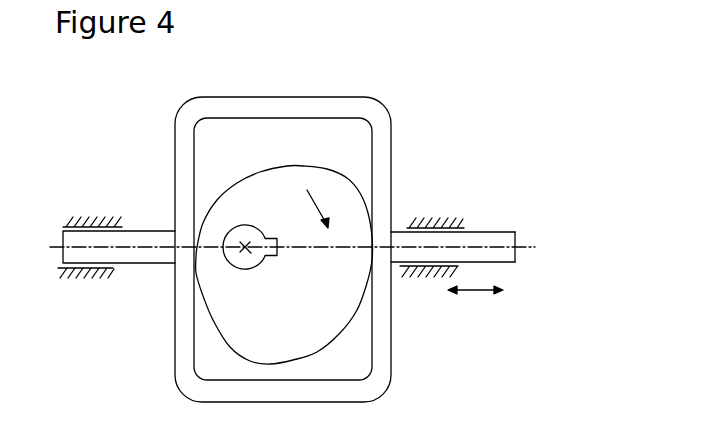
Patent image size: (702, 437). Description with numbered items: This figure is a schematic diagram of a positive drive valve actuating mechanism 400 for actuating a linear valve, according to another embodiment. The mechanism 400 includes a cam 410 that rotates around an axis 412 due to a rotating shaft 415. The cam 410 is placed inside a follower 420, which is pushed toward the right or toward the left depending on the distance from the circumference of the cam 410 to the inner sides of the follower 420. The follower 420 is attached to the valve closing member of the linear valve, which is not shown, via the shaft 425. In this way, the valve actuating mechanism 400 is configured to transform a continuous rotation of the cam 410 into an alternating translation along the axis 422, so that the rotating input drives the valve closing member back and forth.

The positive drive valve actuating mechanism 400 is at (122, 100).
The cam 410 is at (367, 193).
The axis 412 is at (250, 227).
The rotating shaft 415 is at (240, 267).
The follower 420 is at (393, 141).
The axis 422 is at (503, 248).
The shaft 425 is at (506, 232).